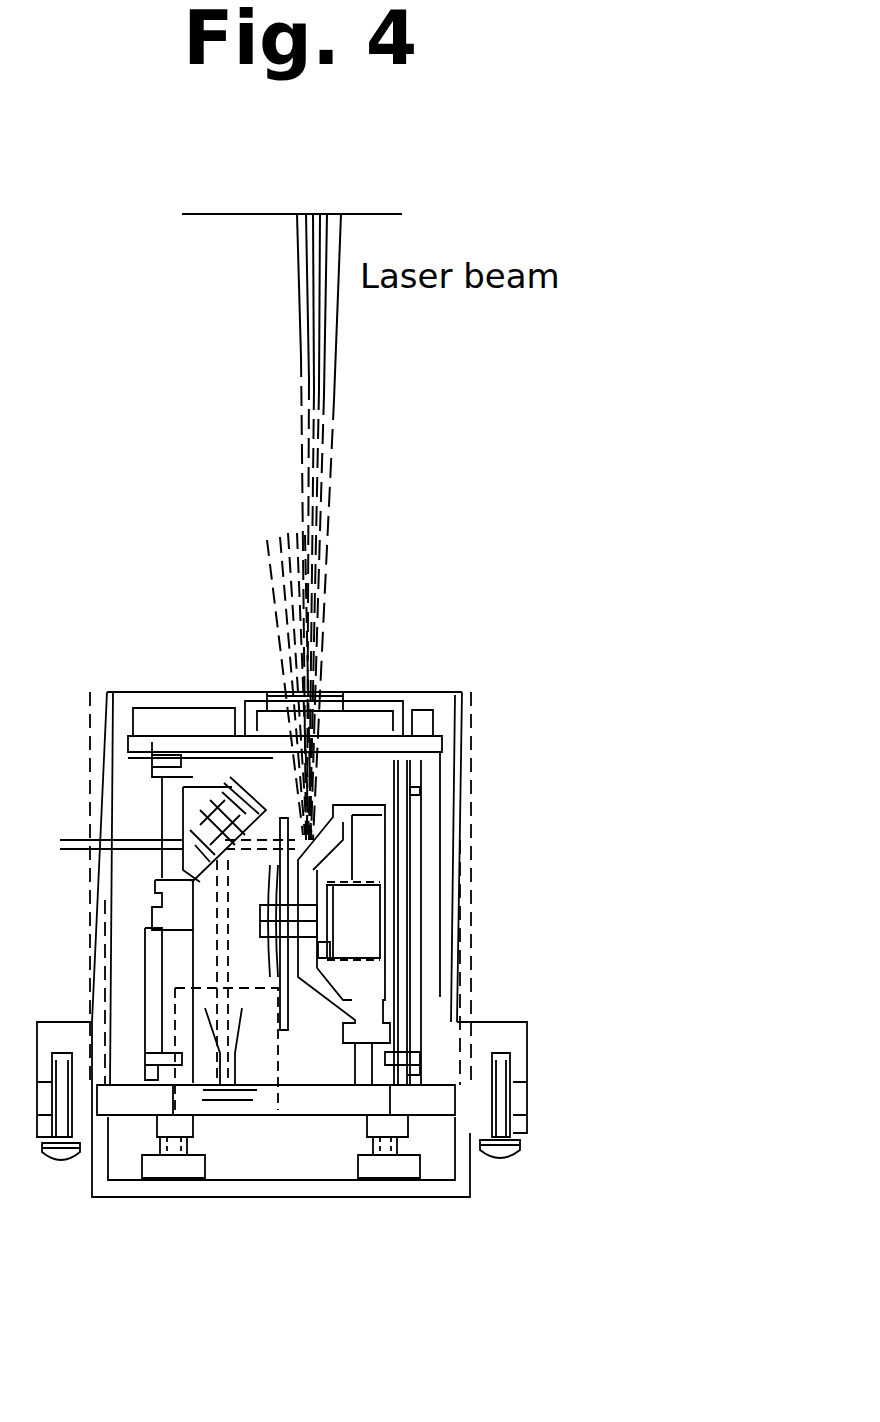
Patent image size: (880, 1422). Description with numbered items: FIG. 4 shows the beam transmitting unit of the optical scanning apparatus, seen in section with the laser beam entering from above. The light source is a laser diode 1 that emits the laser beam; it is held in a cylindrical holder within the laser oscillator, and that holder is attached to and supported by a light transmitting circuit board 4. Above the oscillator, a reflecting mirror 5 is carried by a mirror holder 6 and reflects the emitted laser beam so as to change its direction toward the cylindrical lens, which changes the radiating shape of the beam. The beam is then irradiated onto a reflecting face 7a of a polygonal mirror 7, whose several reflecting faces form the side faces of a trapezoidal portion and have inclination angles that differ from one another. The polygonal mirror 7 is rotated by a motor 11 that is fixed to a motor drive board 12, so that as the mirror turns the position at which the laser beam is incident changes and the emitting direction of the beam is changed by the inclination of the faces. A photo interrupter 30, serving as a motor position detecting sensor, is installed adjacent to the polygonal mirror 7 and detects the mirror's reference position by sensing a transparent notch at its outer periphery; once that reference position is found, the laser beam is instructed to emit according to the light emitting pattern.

The laser diode 1 is at (233, 1073).
The light transmitting circuit board 4 is at (327, 1122).
The reflecting mirror 5 is at (212, 778).
The mirror holder 6 is at (243, 778).
The polygonal mirror 7 is at (370, 806).
The reflecting face 7a is at (327, 822).
The motor 11 is at (355, 905).
The motor drive board 12 is at (415, 922).
The photo interrupter 30 is at (363, 1065).